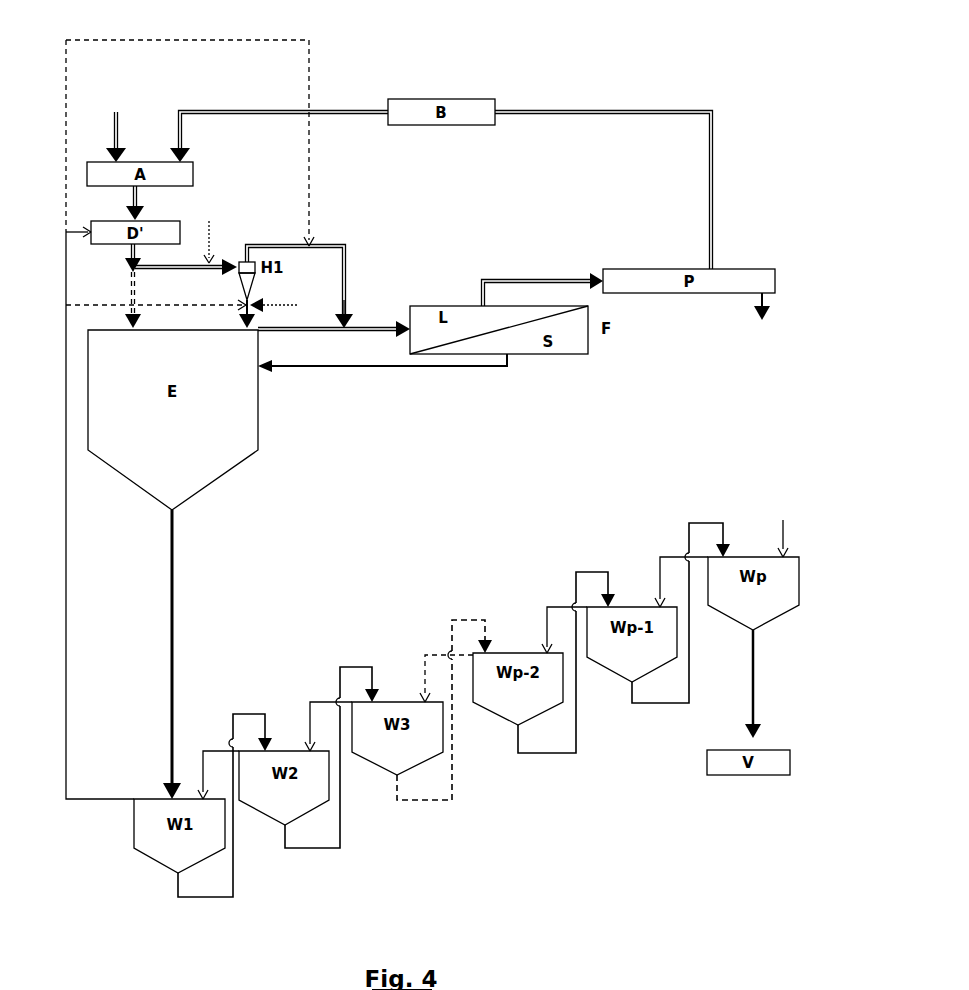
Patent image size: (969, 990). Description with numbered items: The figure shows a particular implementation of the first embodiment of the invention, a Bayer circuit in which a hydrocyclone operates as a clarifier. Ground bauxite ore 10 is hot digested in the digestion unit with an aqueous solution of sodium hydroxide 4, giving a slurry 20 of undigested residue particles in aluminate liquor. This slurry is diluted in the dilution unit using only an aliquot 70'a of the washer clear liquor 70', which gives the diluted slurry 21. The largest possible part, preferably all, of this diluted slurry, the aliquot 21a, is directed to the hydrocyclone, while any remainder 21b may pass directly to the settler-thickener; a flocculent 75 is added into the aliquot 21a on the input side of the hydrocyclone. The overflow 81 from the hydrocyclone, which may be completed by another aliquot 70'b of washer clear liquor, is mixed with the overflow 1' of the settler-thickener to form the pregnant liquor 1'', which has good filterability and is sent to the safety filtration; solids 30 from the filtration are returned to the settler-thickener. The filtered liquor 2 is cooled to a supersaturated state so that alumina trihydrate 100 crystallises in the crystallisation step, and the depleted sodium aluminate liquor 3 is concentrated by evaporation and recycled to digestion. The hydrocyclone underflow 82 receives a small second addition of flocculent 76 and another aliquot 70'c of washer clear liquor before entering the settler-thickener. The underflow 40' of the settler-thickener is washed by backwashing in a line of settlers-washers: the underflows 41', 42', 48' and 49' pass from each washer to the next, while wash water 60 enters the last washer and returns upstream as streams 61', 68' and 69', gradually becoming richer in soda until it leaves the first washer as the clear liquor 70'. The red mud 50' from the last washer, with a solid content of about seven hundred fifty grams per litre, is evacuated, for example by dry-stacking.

The ground bauxite ore 10 is at (116, 127).
The aqueous solution of sodium hydroxide 4 is at (279, 123).
The sodium aluminate liquor 3 is at (604, 175).
The alumina trihydrate 100 is at (761, 315).
The slurry 20 is at (123, 203).
The diluted slurry 21 is at (122, 258).
The aliquot of the diluted slurry 21a is at (186, 277).
The remaining part of the diluted slurry 21b is at (118, 300).
The flocculent 75 is at (219, 241).
The overflow from hydrocyclone H1 81 is at (300, 278).
The aliquot of the washer clear liquor 70'b is at (332, 143).
The flocculent 76 is at (273, 298).
The underflow from hydrocyclone H1 82 is at (237, 314).
The aliquot of washer clear liquor 70'c is at (156, 313).
The aliquot of the washer clear liquor 70'a is at (168, 158).
The washer clear liquor 70' is at (86, 515).
The overflow of the settler-thickener 1' is at (331, 307).
The pregnant liquor 1'' is at (334, 316).
The liquor 2 is at (543, 279).
The solids from filtration 30 is at (382, 375).
The underflow of the settler-thickener 40' is at (188, 654).
The underflow from washer W1 41' is at (225, 819).
The wash water from W2 69' is at (212, 763).
The underflow from washer W2 42' is at (332, 772).
The wash water from W3 68' is at (318, 714).
The underflow from washer Wp-2 48' is at (566, 676).
The underflow from washer Wp-1 49' is at (681, 626).
The wash water from Wp 61' is at (676, 570).
The wash water 60 is at (789, 527).
The red mud 50' is at (769, 684).